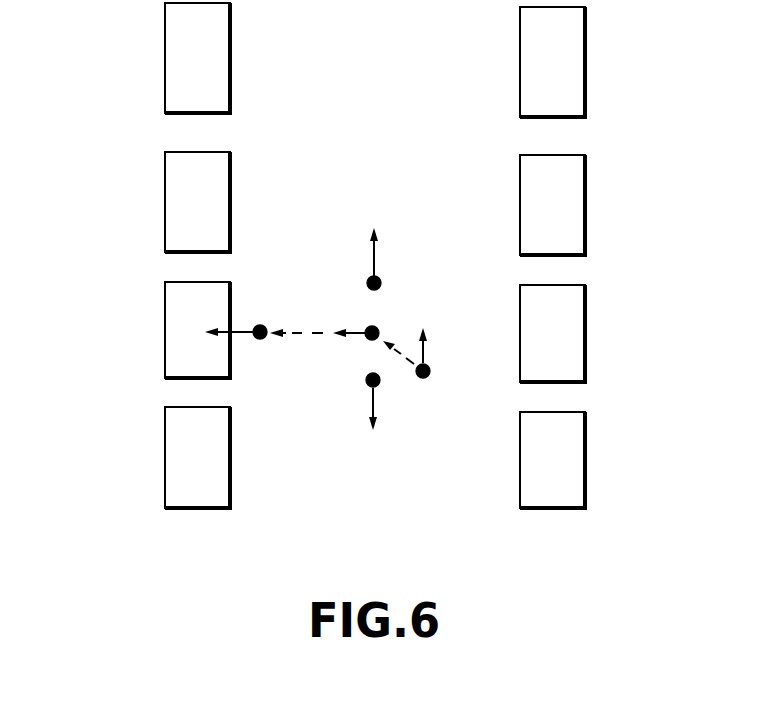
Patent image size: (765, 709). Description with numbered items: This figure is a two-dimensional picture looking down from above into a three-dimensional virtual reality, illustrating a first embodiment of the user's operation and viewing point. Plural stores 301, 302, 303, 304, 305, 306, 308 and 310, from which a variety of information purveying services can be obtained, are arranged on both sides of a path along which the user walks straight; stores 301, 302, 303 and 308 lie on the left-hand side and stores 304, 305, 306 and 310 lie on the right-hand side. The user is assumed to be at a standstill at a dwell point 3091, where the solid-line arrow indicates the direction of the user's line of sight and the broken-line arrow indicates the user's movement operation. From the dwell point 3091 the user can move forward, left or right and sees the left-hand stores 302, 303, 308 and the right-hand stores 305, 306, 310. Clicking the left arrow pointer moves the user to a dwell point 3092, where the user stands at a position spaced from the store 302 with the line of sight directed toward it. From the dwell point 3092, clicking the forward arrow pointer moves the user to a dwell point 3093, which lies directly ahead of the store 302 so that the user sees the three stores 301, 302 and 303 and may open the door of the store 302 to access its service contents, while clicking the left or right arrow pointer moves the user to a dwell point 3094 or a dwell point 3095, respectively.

The store 301 is at (172, 448).
The store 302 is at (178, 322).
The store 303 is at (178, 192).
The store 304 is at (573, 449).
The store 305 is at (575, 321).
The store 306 is at (575, 205).
The store 308 is at (180, 70).
The store 310 is at (575, 66).
The dwell point 3091 is at (427, 365).
The dwell point 3092 is at (366, 328).
The dwell point 3093 is at (258, 342).
The dwell point 3094 is at (378, 383).
The dwell point 3095 is at (379, 278).